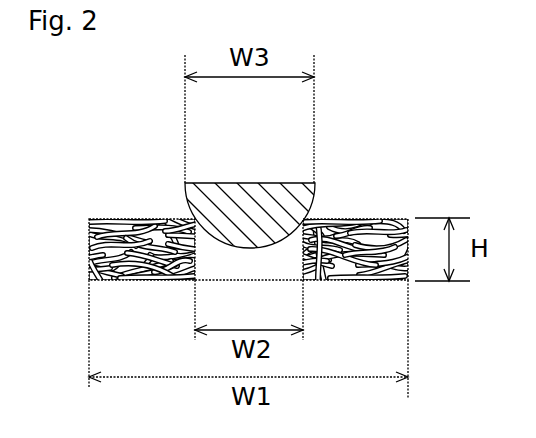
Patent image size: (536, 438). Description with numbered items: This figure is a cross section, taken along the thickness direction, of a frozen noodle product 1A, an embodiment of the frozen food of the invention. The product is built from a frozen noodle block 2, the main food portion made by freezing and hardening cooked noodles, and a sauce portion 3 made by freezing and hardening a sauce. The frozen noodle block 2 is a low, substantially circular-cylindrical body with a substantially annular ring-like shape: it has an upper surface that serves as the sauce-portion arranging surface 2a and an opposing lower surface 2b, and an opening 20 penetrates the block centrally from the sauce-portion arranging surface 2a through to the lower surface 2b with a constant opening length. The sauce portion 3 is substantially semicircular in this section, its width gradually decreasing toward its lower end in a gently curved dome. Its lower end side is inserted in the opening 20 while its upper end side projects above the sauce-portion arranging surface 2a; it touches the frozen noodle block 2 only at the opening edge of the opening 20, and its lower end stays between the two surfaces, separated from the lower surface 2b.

The frozen noodle product 1A is at (442, 152).
The frozen noodle block 2 is at (249, 237).
The sauce-portion arranging surface 2a is at (138, 218).
The lower surface 2b is at (350, 282).
The sauce portion 3 is at (250, 183).
The opening 20 is at (250, 282).